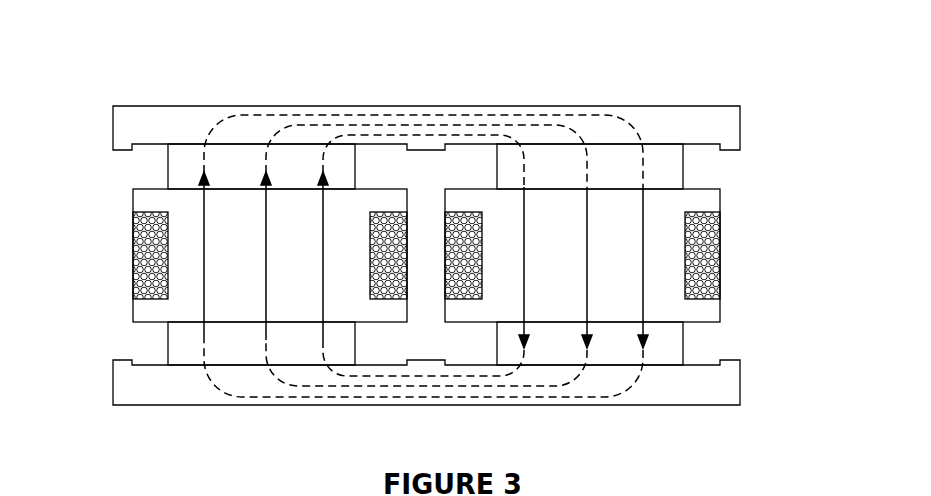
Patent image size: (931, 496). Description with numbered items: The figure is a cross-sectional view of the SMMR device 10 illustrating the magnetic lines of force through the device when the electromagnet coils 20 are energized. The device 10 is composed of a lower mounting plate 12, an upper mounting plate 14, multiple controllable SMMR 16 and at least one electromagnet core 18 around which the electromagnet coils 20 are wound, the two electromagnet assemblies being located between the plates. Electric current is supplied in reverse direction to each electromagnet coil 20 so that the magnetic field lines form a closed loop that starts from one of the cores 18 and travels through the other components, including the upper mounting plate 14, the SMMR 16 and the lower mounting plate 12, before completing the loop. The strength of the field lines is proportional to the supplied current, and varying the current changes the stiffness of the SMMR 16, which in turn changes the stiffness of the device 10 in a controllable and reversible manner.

The SMMR device 10 is at (600, 82).
The lower mounting plate 12 is at (678, 387).
The upper mounting plate 14 is at (188, 125).
The controllable SMMR 16 is at (168, 170).
The electromagnet core 18 is at (142, 307).
The electromagnet coil 20 is at (138, 240).